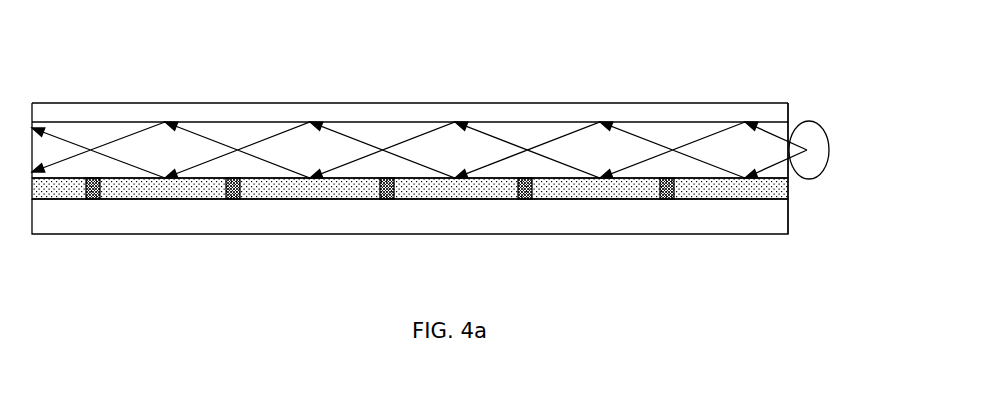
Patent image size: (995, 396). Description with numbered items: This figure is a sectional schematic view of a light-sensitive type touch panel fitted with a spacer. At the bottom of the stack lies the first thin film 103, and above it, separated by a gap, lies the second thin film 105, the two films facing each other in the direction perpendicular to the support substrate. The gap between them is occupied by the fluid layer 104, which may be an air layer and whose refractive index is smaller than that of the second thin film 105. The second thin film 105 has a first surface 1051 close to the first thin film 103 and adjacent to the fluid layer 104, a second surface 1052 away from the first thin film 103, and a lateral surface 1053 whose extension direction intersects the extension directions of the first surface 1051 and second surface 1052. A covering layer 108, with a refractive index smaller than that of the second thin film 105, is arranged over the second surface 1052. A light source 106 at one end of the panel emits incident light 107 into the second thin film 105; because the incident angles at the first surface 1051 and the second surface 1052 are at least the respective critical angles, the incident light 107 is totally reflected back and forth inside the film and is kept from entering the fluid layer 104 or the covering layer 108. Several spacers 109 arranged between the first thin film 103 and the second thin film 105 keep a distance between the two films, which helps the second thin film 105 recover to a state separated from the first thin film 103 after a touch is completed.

The first thin film 103 is at (383, 220).
The fluid layer 104 is at (607, 189).
The second thin film 105 is at (463, 148).
The first surface 1051 is at (188, 179).
The second surface 1052 is at (255, 122).
The lateral surface 1053 is at (745, 162).
The light source 106 is at (802, 142).
The incident light 107 is at (745, 162).
The covering layer 108 is at (350, 115).
The spacer 109 is at (93, 199).